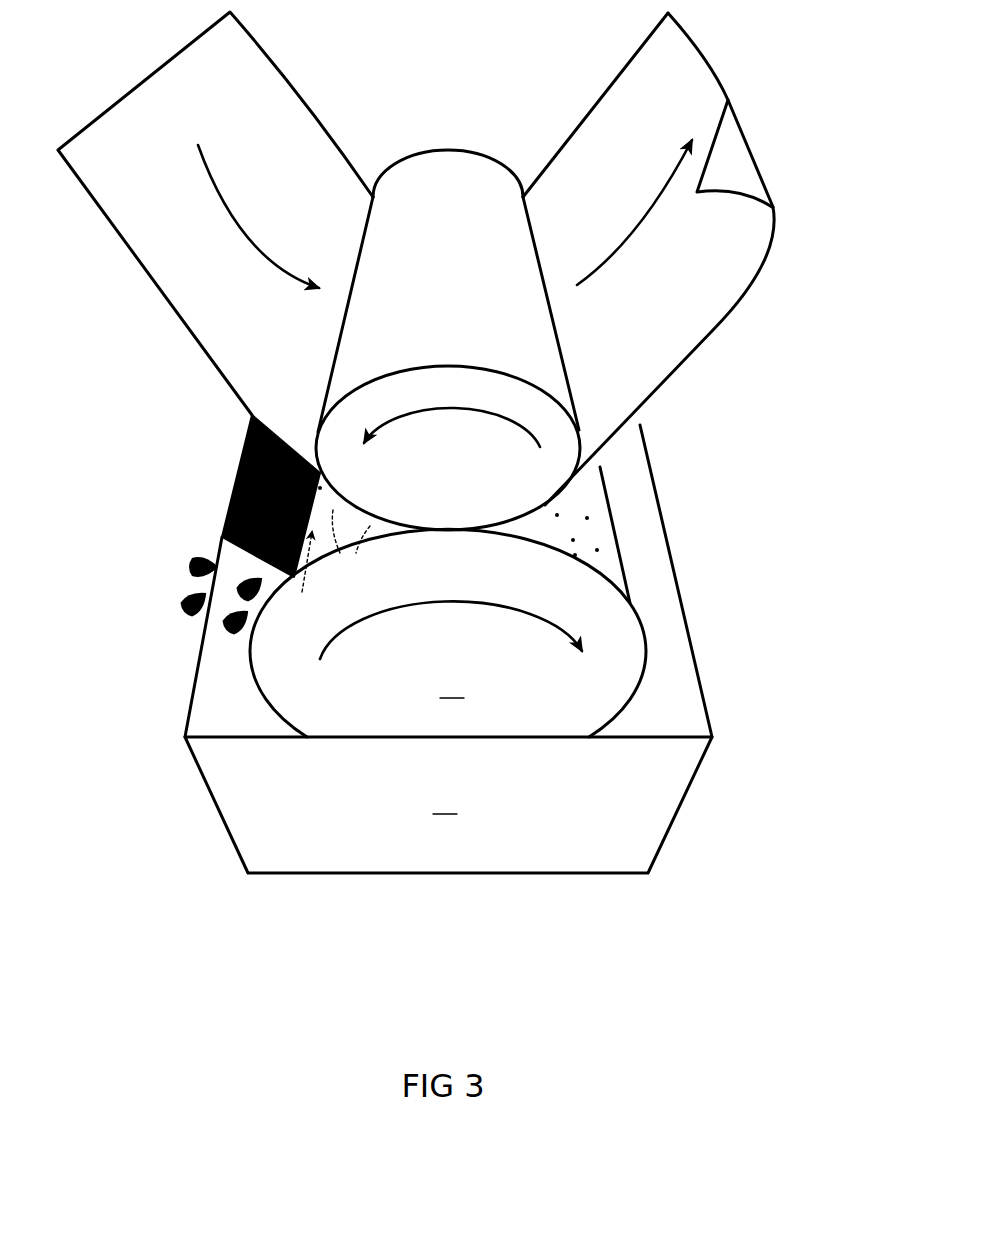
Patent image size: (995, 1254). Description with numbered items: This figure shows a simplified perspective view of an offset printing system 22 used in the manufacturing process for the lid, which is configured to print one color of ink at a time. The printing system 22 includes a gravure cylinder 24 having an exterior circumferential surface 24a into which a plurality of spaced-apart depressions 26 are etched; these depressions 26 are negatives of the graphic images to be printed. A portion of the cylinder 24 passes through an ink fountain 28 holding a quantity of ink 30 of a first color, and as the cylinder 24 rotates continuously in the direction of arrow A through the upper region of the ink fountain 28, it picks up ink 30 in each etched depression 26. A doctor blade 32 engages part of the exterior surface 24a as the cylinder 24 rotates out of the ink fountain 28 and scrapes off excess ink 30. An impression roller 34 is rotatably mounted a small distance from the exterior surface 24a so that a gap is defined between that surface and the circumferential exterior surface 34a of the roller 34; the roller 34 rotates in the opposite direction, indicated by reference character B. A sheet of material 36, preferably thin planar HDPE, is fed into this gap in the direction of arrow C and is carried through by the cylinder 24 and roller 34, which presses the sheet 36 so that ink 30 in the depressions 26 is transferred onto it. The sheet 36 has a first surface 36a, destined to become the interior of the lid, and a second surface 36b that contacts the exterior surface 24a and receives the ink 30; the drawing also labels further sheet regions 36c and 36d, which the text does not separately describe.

The printing system 22 is at (515, 649).
The gravure cylinder 24 is at (448, 611).
The exterior circumferential surface 24a is at (300, 575).
The depressions 26 is at (373, 527).
The ink fountain 28 is at (448, 805).
The ink 30 is at (192, 567).
The doctor blade 32 is at (242, 458).
The impression roller 34 is at (448, 340).
The circumferential exterior surface 34a is at (448, 242).
The sheet of material 36 is at (433, 258).
The first surface 36a is at (242, 348).
The second surface 36b is at (735, 170).
The right panel lower portion 36c is at (691, 370).
The right panel upper edge 36d is at (559, 152).